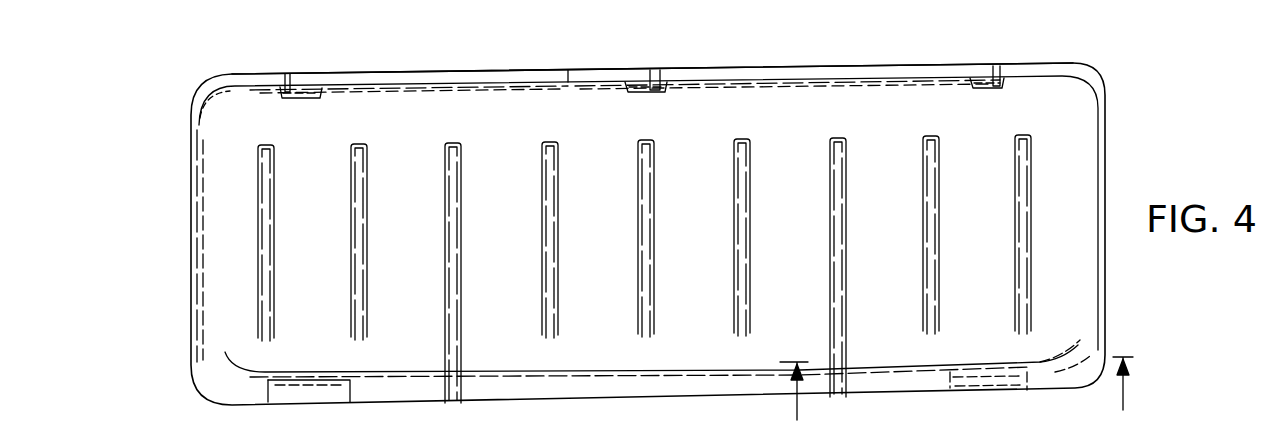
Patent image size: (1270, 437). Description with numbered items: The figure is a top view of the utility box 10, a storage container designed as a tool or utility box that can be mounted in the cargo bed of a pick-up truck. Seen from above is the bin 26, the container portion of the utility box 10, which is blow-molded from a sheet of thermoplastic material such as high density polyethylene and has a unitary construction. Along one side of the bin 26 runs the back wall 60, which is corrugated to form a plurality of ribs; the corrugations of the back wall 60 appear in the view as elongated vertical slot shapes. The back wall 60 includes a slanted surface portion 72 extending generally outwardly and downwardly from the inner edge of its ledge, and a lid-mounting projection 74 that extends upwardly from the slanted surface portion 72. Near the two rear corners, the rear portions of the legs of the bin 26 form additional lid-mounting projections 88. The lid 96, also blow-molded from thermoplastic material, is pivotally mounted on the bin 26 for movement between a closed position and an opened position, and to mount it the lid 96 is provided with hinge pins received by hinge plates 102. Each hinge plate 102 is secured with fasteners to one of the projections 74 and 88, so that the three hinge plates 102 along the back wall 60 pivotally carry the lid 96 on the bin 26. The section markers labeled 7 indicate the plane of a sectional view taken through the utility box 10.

The utility box 10 is at (1133, 116).
The bin 26 is at (932, 66).
The back wall 60 is at (433, 73).
The slanted surface portion 72 is at (779, 72).
The lid-mounting projection 74 is at (597, 72).
The lid-mounting projections 88 is at (243, 73).
The lid 96 is at (210, 298).
The hinge plates 102 is at (289, 80).
The section line 7- 7 is at (956, 397).